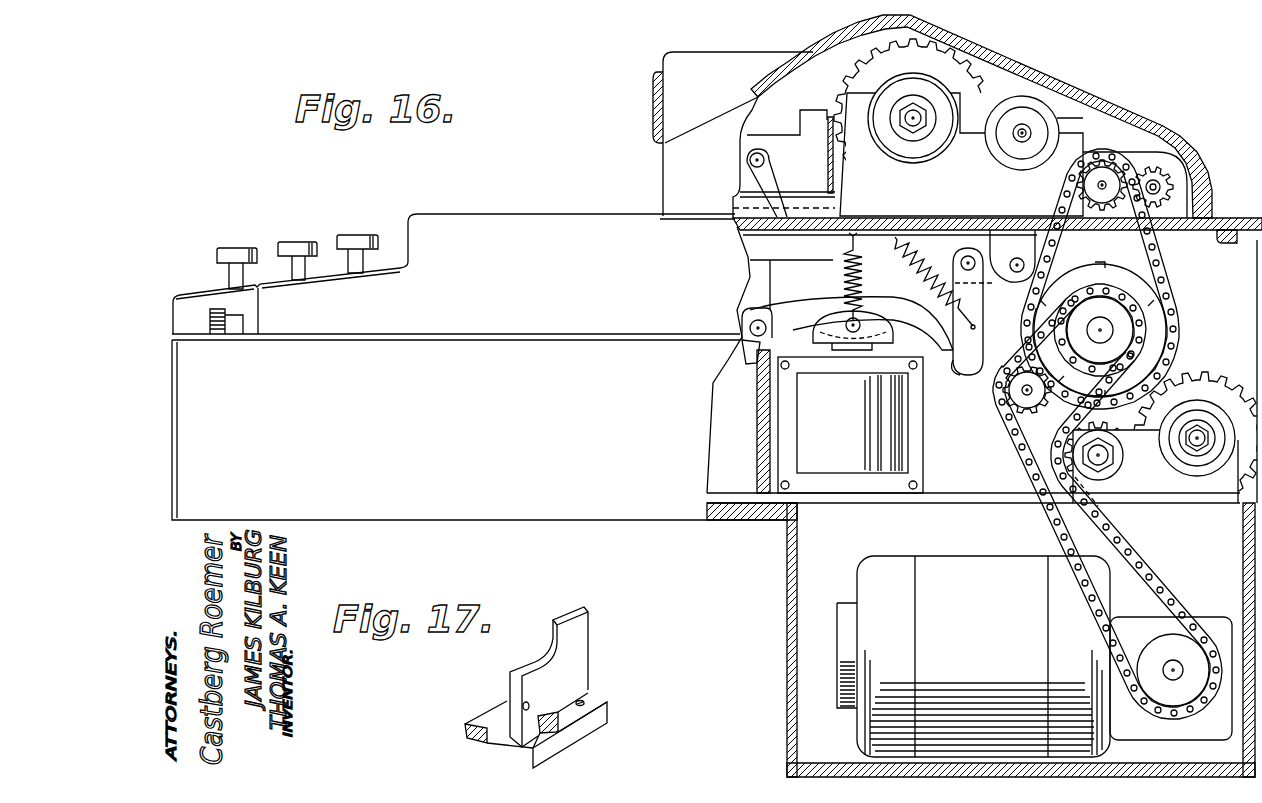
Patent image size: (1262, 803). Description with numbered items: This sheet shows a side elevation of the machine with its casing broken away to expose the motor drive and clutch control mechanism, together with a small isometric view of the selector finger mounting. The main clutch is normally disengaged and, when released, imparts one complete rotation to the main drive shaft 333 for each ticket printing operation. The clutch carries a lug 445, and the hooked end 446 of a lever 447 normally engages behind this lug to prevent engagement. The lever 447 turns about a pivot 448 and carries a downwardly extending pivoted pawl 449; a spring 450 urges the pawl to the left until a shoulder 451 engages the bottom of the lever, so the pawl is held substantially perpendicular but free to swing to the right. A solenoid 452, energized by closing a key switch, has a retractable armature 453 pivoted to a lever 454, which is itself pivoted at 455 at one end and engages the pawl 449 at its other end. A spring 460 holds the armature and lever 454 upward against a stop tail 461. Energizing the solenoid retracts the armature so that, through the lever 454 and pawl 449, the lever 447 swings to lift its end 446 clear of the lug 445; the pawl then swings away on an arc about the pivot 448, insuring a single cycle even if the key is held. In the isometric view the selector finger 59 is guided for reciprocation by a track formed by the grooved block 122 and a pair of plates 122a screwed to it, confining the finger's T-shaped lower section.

In FIG. 16, the lever 447 is at (833, 258).
In FIG. 16, the spring 460 is at (860, 284).
In FIG. 16, the spring 450 is at (930, 287).
In FIG. 16, the shoulder 451 is at (981, 295).
In FIG. 16, the pivot 448 is at (1013, 256).
In FIG. 16, the hooked end 446 is at (1112, 248).
In FIG. 16, the lug 445 is at (1100, 329).
In FIG. 16, the main drive shaft 333 is at (1090, 330).
In FIG. 16, the pivot 455 is at (748, 327).
In FIG. 16, the stop tail 461 is at (752, 352).
In FIG. 16, the lever 454 is at (923, 323).
In FIG. 16, the retractable armature 453 is at (863, 350).
In FIG. 16, the pawl 449 is at (941, 370).
In FIG. 16, the solenoid 452 is at (853, 424).
In FIG. 17, the selector finger 59 is at (583, 647).
In FIG. 17, the plates 122a is at (593, 695).
In FIG. 17, the track 122 is at (563, 745).